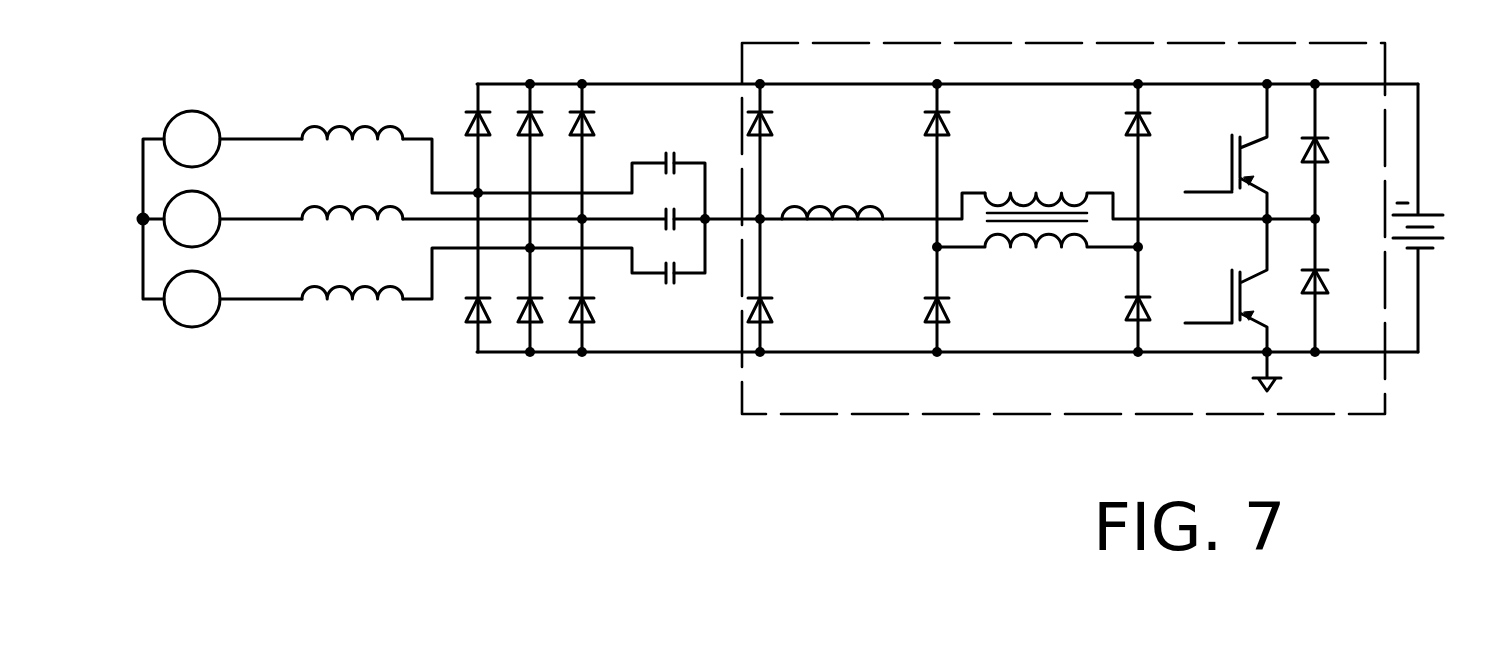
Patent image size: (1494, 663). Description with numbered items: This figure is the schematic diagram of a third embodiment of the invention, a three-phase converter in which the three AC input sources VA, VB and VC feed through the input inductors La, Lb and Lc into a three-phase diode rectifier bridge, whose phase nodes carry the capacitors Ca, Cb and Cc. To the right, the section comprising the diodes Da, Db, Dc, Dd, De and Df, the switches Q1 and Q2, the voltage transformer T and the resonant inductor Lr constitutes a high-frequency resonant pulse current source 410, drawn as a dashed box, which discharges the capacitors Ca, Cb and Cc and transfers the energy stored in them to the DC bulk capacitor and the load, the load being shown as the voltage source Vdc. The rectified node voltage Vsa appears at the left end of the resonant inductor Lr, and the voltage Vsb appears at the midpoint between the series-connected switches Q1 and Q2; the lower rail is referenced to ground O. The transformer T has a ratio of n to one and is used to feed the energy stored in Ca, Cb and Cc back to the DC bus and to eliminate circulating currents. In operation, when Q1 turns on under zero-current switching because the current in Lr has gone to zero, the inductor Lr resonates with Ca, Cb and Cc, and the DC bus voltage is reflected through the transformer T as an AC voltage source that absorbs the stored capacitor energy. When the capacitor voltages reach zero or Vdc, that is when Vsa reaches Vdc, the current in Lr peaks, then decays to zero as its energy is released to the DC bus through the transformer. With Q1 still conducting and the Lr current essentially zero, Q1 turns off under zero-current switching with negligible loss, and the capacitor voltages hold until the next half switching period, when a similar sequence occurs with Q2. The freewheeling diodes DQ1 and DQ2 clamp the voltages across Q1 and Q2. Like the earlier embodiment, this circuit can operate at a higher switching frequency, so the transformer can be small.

The high-frequency resonant pulse current source 410 is at (858, 414).
The phase A voltage source VA is at (233, 128).
The phase B voltage source VB is at (233, 213).
The phase C voltage source VC is at (233, 295).
The phase A inductor La is at (352, 114).
The phase B inductor Lb is at (352, 195).
The phase C inductor Lc is at (352, 277).
The capacitor Ca is at (688, 177).
The capacitor Cb is at (683, 234).
The capacitor Cc is at (679, 292).
The diode Da is at (786, 129).
The diode Db is at (787, 317).
The diode Dc is at (961, 129).
The diode Dd is at (963, 321).
The diode De is at (1118, 130).
The diode Df is at (1117, 318).
The resonant inductor Lr is at (832, 194).
The voltage transformer T is at (1037, 201).
The switch Q1 is at (1225, 151).
The switch Q2 is at (1225, 285).
The freewheeling diode DQ1 is at (1351, 156).
The freewheeling diode DQ2 is at (1346, 302).
The voltage Vsa is at (805, 247).
The voltage Vsb is at (1244, 240).
The DC bus voltage source Vdc is at (1443, 218).
The ground reference O is at (1279, 378).